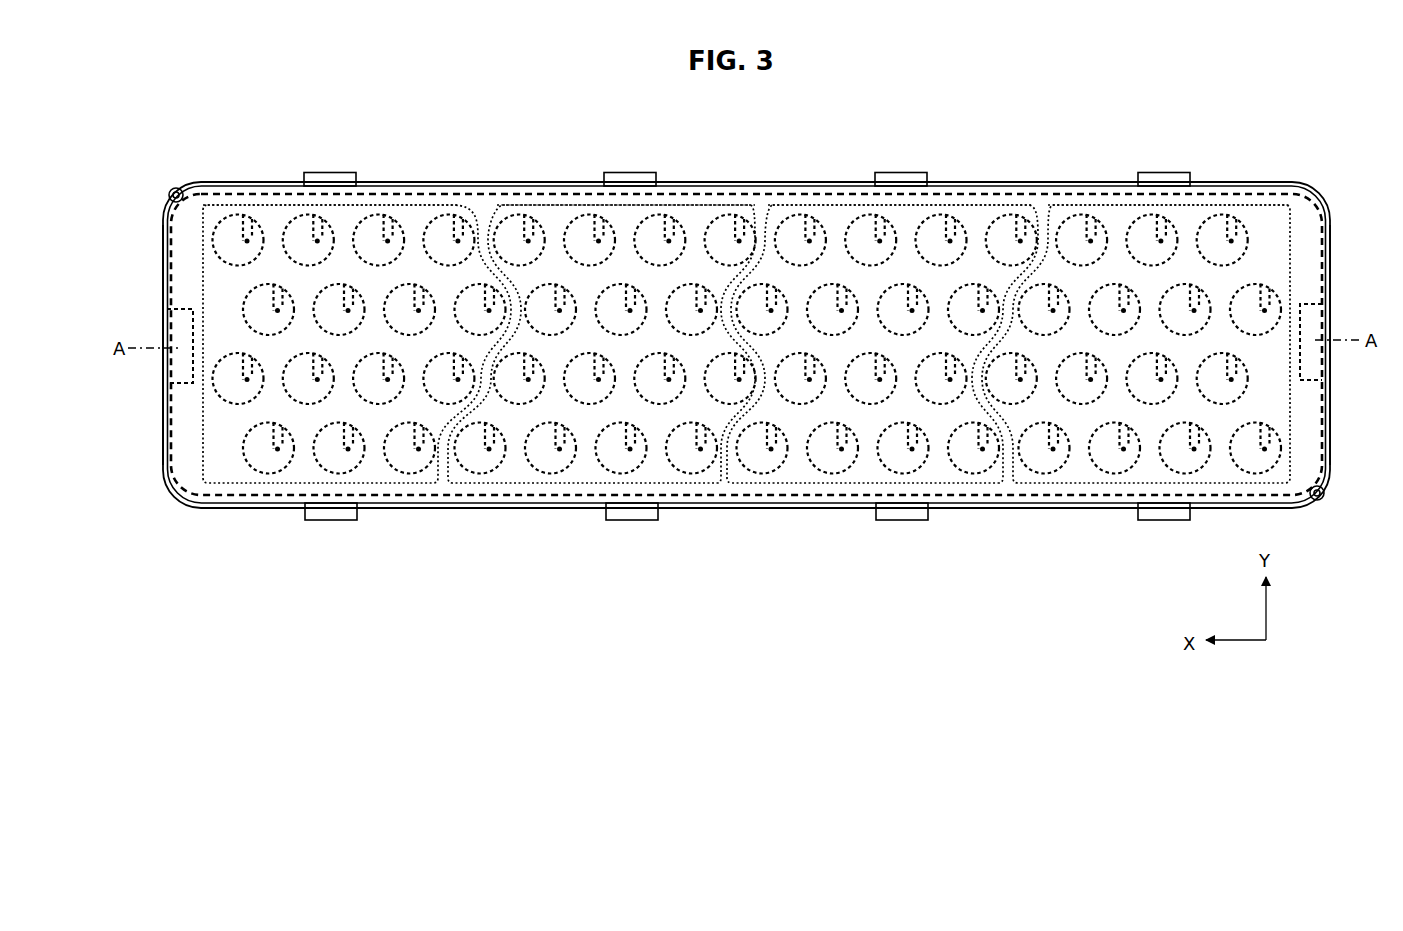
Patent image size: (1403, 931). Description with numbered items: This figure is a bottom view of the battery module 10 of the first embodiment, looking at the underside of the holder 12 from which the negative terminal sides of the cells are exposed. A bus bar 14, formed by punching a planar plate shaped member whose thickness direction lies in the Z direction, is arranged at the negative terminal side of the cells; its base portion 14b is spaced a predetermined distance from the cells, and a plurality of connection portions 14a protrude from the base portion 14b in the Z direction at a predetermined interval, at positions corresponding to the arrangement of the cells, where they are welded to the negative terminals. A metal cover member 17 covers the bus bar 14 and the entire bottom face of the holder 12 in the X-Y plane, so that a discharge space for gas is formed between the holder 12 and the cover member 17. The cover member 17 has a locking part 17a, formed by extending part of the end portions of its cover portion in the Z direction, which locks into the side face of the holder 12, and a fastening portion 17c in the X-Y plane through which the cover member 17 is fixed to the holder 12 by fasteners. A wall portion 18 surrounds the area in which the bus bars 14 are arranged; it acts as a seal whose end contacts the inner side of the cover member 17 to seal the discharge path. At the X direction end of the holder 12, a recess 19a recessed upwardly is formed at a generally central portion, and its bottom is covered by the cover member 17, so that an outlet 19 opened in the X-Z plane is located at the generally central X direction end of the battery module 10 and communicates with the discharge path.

The battery module 10 is at (275, 147).
The holder 12 is at (442, 512).
The bus bar 14 is at (433, 199).
The connection portions 14a is at (456, 232).
The base portion 14b is at (348, 208).
The cover member 17 is at (498, 506).
The locking part 17a is at (327, 172).
The fastening portion 17c is at (192, 186).
The wall portion 18 is at (545, 494).
The outlet 19 is at (161, 360).
The recess 19a is at (167, 327).